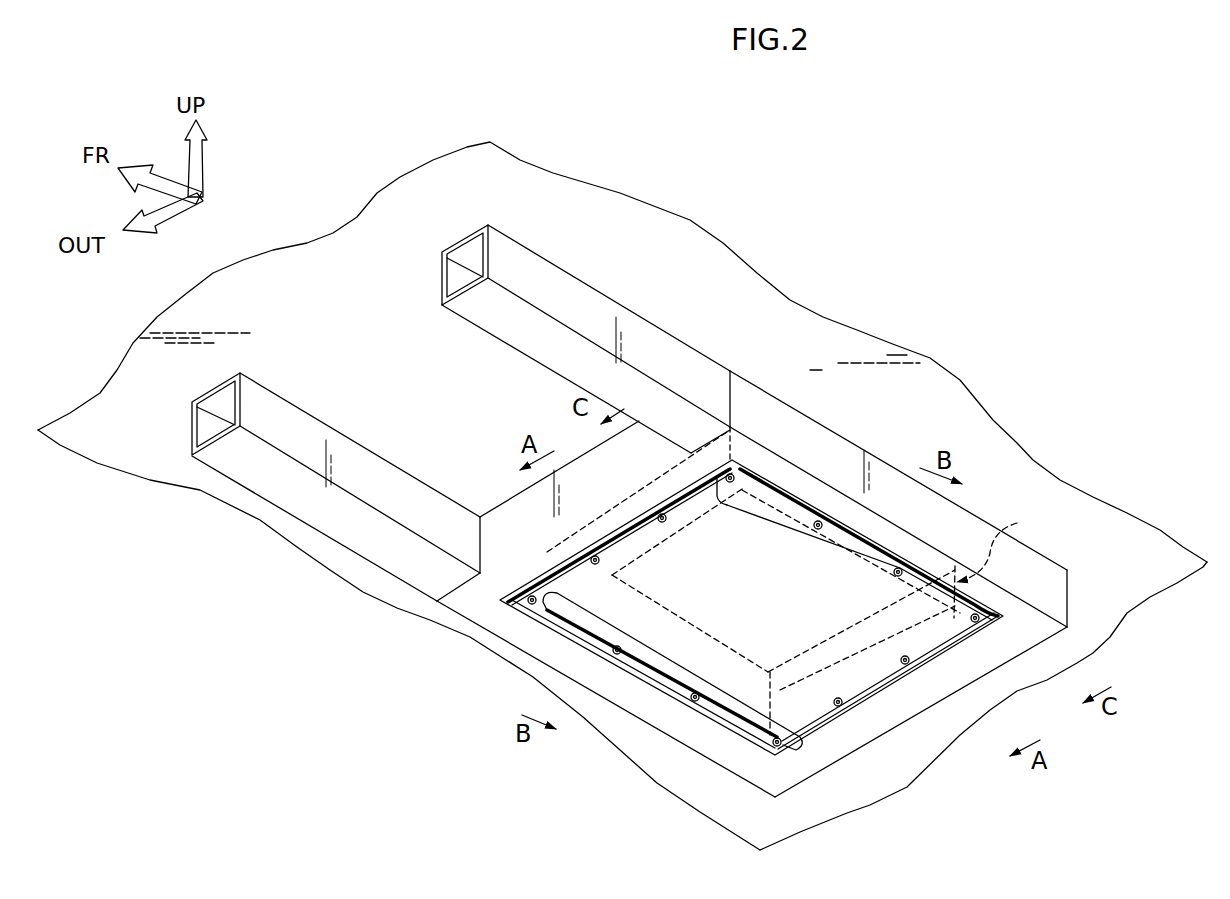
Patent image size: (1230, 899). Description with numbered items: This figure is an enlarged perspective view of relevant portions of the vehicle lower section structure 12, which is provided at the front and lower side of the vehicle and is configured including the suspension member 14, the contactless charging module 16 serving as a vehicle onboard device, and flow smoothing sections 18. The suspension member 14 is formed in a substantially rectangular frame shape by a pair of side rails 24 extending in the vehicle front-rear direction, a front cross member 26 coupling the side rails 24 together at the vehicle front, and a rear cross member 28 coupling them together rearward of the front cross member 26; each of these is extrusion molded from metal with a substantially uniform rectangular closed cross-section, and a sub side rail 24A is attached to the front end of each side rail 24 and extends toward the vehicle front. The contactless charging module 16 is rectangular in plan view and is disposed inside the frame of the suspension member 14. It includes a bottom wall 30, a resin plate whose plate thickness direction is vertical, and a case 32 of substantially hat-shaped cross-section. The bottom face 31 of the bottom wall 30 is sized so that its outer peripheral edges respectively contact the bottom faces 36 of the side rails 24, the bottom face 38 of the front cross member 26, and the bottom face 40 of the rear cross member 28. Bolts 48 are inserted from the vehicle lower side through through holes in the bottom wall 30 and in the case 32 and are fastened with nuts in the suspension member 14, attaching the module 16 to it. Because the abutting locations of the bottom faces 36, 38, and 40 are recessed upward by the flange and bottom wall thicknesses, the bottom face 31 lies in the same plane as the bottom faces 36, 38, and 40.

The vehicle lower section structure 12 is at (658, 302).
The suspension member 14 is at (782, 396).
The contactless charging module 16 is at (828, 752).
The flow smoothing section 18 is at (766, 520).
The side rail 24 is at (826, 440).
The sub side rail 24A is at (560, 292).
The front cross member 26 is at (511, 505).
The rear cross member 28 is at (924, 697).
The bottom wall 30 is at (543, 628).
The bottom face 31 is at (714, 534).
The case 32 is at (1002, 564).
The bottom face of side rail 36 is at (870, 523).
The bottom face of front cross member 38 is at (470, 600).
The bottom face of rear cross member 40 is at (840, 722).
The bolt 48 is at (534, 596).